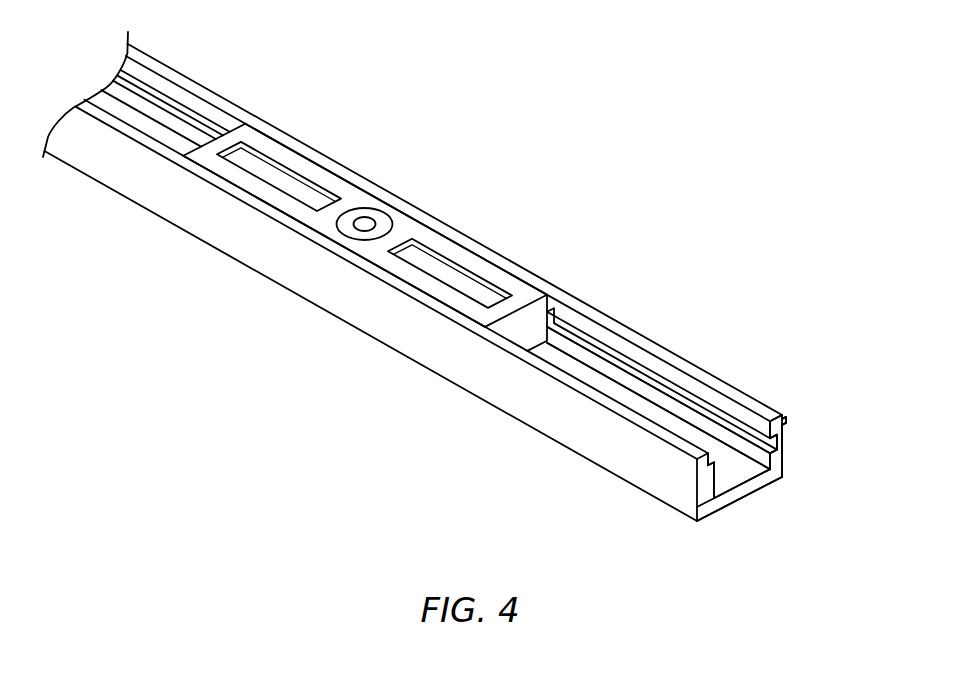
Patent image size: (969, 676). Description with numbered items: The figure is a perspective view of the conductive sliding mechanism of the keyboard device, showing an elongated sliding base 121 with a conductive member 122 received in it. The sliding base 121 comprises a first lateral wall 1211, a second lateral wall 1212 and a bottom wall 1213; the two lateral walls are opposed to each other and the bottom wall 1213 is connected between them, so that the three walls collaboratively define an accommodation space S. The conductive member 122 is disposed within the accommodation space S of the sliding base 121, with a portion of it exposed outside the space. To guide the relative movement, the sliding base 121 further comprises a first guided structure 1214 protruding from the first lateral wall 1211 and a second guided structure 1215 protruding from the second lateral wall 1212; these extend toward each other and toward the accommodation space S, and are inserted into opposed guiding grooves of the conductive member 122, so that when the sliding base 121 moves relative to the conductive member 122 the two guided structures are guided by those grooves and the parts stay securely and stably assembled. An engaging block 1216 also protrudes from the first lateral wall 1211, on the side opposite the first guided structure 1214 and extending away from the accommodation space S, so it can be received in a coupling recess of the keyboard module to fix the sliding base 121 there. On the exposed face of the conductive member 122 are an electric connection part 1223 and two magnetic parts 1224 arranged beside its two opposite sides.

The sliding base 121 is at (463, 303).
The conductive member 122 is at (365, 198).
The first lateral wall 1211 is at (773, 454).
The second lateral wall 1212 is at (704, 493).
The bottom wall 1213 is at (752, 487).
The first guided structure 1214 is at (768, 478).
The second guided structure 1215 is at (712, 490).
The engaging block 1216 is at (790, 420).
The electric connection part 1223 is at (373, 216).
The magnetic part 1224 is at (301, 190).
The accommodation space S is at (569, 352).